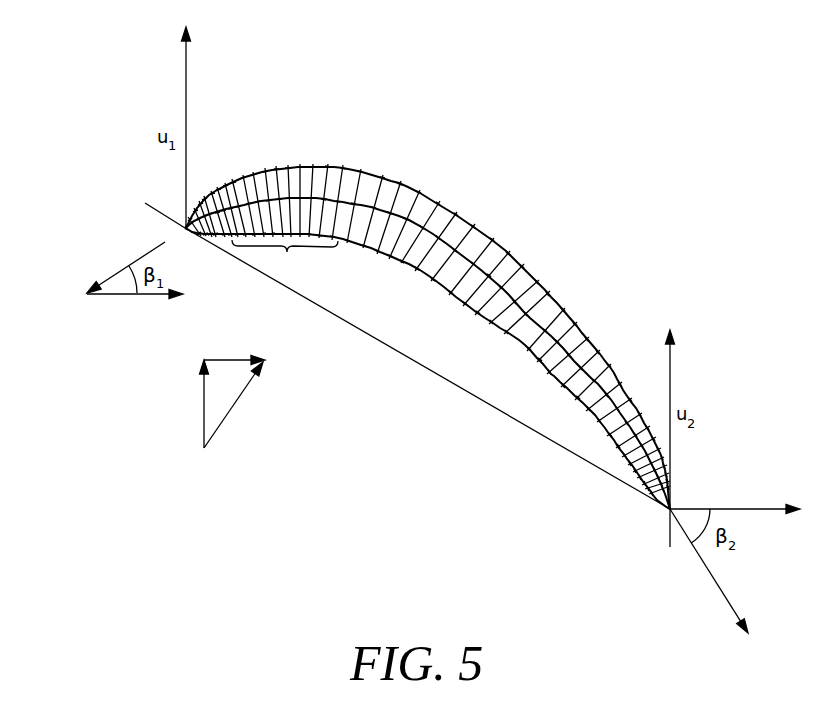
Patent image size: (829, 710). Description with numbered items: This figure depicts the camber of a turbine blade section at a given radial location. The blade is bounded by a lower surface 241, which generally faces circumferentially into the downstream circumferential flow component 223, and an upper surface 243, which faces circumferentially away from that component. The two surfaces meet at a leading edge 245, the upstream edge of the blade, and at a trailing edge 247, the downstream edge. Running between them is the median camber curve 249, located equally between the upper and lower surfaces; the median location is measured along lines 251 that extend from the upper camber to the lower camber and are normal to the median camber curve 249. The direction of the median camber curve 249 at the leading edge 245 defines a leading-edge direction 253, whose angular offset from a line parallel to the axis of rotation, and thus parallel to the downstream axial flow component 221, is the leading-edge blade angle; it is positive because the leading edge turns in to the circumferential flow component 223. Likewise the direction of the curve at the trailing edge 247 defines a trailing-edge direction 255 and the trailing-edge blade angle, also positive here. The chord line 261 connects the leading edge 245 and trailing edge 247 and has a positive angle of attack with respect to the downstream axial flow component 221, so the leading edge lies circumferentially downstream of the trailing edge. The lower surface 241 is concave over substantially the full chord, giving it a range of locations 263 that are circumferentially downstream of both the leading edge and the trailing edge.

The downstream axial flow component 221 is at (230, 358).
The downstream circumferential flow component 223 is at (203, 398).
The lower surface 241 is at (500, 328).
The upper surface 243 is at (484, 234).
The leading edge 245 is at (183, 227).
The trailing edge 247 is at (666, 512).
The median camber curve 249 is at (415, 228).
The lines 251 is at (377, 195).
The leading-edge direction 253 is at (138, 258).
The trailing-edge direction 255 is at (726, 601).
The chord line 261 is at (390, 349).
The range of locations 263 is at (287, 253).